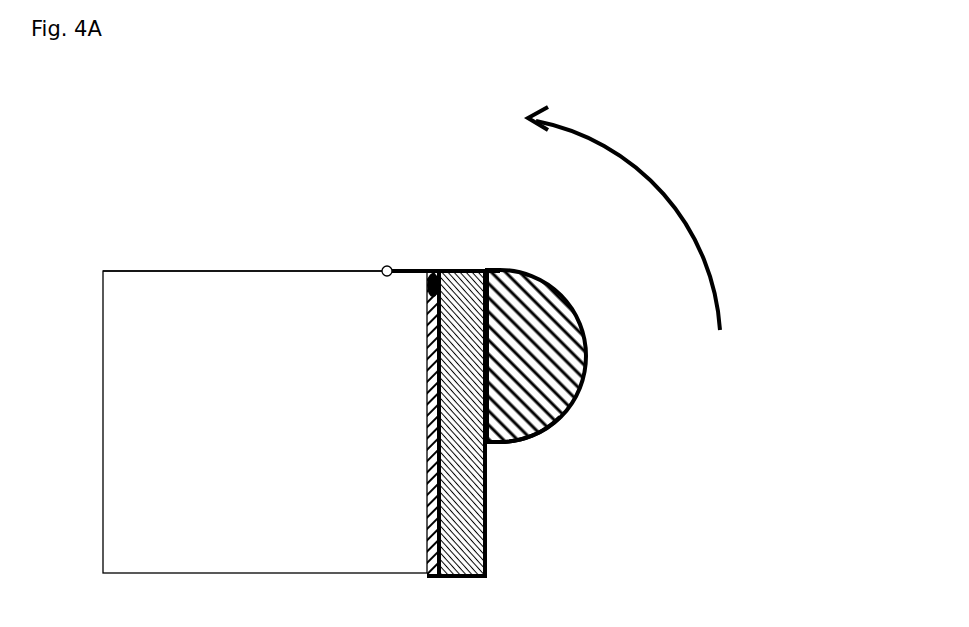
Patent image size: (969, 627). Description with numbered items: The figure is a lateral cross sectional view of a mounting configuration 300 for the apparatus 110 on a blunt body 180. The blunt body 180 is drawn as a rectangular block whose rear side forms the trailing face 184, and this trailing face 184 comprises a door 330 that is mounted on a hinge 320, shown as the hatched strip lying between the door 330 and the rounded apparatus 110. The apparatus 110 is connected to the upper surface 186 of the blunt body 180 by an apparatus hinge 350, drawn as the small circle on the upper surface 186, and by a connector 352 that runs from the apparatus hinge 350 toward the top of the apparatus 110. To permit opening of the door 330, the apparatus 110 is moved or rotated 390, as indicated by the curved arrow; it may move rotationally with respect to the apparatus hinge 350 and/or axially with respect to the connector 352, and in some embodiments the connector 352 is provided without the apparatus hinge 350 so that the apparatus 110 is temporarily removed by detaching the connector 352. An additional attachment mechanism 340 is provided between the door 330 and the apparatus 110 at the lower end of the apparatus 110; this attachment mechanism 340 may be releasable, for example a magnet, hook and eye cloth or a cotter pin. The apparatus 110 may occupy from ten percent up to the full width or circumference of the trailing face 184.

The mounting configuration 300 is at (64, 173).
The blunt body 180 is at (180, 365).
The upper surface 186 is at (353, 270).
The apparatus hinge 350 is at (385, 266).
The connector 352 is at (419, 270).
The hinge 320 is at (447, 307).
The door 330 is at (487, 507).
The trailing face 184 is at (487, 472).
The apparatus 110 is at (530, 345).
The attachment mechanism 340 is at (538, 435).
The rotation 390 is at (660, 215).